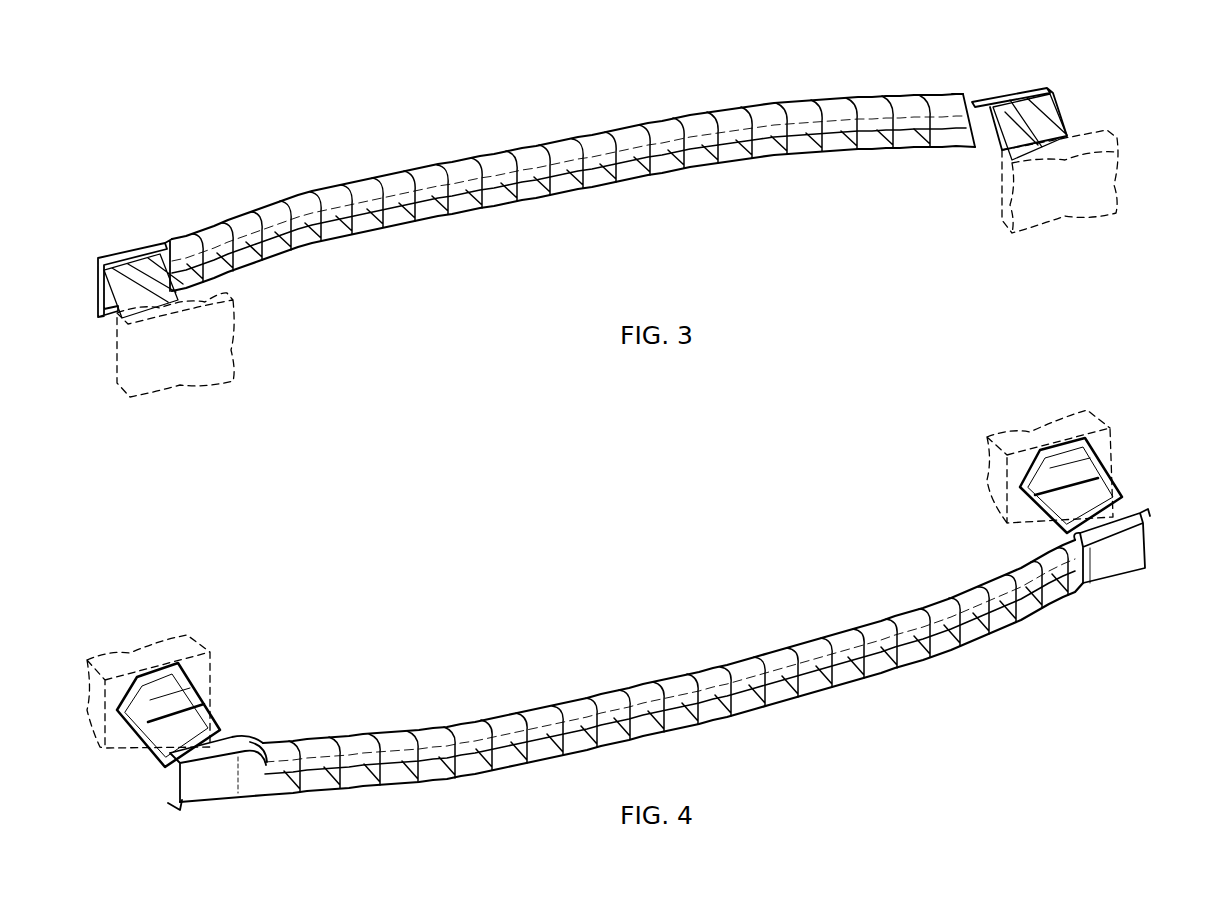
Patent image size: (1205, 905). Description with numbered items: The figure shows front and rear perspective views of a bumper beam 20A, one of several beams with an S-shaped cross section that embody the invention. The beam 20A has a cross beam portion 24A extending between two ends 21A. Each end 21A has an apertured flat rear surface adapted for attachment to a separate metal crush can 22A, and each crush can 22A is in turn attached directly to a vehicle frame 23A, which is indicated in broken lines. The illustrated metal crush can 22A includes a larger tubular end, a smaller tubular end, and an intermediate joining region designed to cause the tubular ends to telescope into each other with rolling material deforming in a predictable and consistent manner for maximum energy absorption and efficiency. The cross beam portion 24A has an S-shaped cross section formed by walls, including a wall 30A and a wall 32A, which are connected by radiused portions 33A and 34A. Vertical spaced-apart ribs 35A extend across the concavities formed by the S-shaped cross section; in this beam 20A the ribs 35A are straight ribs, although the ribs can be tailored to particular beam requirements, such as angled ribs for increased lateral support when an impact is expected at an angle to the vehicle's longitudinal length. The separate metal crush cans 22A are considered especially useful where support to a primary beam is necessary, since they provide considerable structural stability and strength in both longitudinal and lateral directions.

In FIG. 3, the beam 20A is at (189, 150).
In FIG. 4, the beam 20A is at (189, 595).
In FIG. 3, the end 21A is at (120, 256).
In FIG. 4, the end 21A is at (210, 793).
In FIG. 3, the crush can 22A is at (108, 292).
In FIG. 4, the crush can 22A is at (185, 675).
In FIG. 3, the vehicle frame 23A is at (228, 293).
In FIG. 4, the vehicle frame 23A is at (212, 636).
In FIG. 3, the cross beam portion 24A is at (628, 130).
In FIG. 4, the cross beam portion 24A is at (840, 630).
In FIG. 3, the wall 30A is at (392, 181).
In FIG. 4, the wall 30A is at (843, 690).
In FIG. 3, the wall 32A is at (735, 165).
In FIG. 4, the wall 32A is at (573, 710).
In FIG. 3, the radiused portion 33A is at (438, 190).
In FIG. 4, the radiused portion 34A is at (542, 735).
In FIG. 3, the rib 35A is at (607, 177).
In FIG. 4, the rib 35A is at (722, 706).